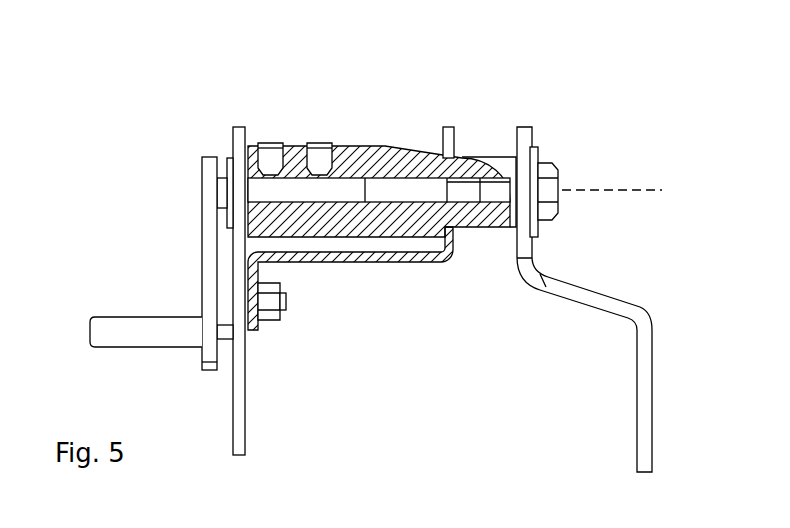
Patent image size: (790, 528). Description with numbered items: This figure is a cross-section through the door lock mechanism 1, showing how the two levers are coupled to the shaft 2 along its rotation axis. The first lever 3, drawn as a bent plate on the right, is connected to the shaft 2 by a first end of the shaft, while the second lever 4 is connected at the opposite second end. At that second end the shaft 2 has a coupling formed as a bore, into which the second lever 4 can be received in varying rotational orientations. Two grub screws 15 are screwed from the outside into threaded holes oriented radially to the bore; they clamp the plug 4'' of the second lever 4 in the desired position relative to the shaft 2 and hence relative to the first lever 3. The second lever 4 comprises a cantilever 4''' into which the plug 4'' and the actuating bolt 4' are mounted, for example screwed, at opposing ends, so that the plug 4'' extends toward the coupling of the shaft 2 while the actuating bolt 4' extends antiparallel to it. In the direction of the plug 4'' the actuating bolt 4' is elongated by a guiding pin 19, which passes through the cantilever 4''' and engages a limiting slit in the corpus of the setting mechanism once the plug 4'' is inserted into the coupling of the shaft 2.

The fastening arrangement 1 is at (535, 66).
The shaft 2 is at (362, 150).
The first lever 3 is at (587, 292).
The second lever 4 is at (164, 275).
The actuating bolt 4' is at (143, 288).
The plug 4'' is at (350, 261).
The cantilever 4''' is at (181, 263).
The grub screws 15 is at (270, 152).
The guiding pin 19 is at (258, 333).